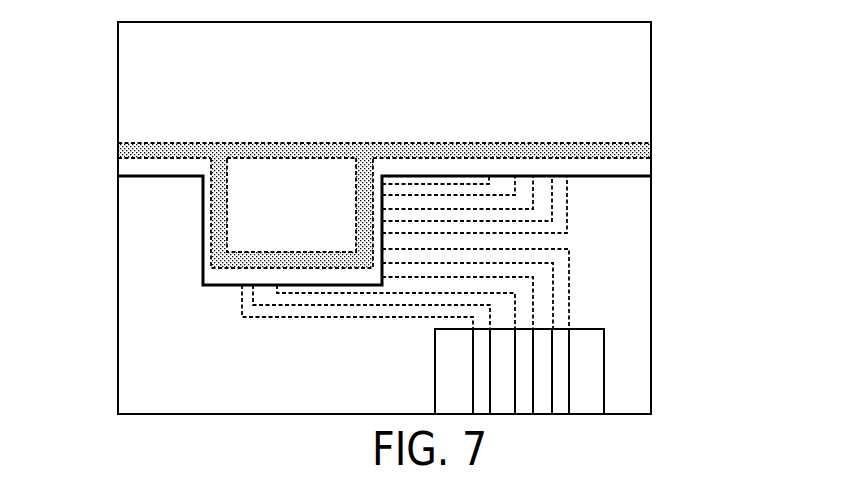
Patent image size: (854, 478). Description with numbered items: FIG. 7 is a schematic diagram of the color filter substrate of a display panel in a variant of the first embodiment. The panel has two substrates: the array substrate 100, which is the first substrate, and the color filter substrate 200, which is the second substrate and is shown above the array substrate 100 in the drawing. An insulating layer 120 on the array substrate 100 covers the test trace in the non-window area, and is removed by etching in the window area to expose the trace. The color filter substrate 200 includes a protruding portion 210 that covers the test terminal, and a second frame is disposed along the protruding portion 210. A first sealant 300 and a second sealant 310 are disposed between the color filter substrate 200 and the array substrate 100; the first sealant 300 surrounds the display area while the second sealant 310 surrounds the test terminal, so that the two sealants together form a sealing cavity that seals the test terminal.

The array substrate 100 is at (631, 271).
The insulating layer 120 is at (600, 365).
The color filter substrate 200 is at (630, 77).
The protruding portion 210 is at (222, 274).
The first sealant 300 is at (641, 150).
The second sealant 310 is at (225, 218).